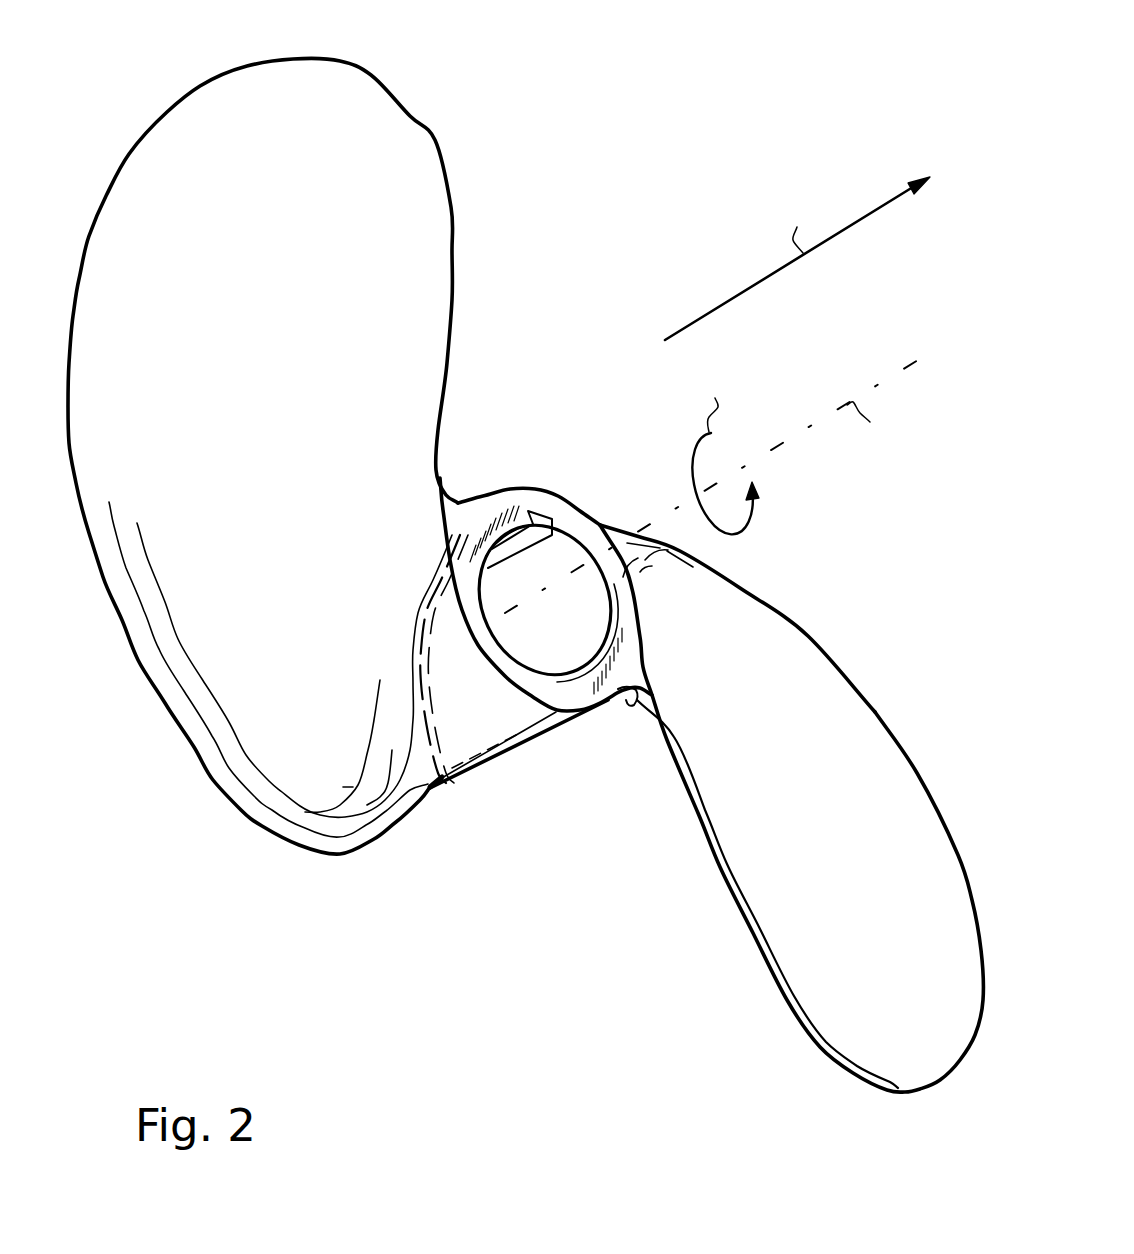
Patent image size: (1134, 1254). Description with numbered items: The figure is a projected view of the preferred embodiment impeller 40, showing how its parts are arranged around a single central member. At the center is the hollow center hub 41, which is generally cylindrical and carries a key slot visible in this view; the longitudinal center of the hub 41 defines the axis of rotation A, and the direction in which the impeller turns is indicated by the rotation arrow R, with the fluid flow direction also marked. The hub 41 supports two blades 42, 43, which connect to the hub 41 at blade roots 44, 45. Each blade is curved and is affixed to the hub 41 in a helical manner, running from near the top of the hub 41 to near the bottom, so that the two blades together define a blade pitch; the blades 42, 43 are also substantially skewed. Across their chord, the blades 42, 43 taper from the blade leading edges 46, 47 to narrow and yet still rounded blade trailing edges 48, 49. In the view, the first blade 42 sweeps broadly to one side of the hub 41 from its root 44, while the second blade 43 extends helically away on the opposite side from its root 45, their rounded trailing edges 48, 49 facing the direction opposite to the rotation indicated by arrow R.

The impeller 40 is at (545, 62).
The hollow center hub 41 is at (530, 743).
The blade 42 is at (465, 207).
The blade 43 is at (882, 708).
The blade root 44 is at (437, 790).
The blade root 45 is at (632, 694).
The blade leading edge 46 is at (382, 843).
The blade leading edge 47 is at (740, 583).
The blade trailing edge 48 is at (463, 500).
The blade trailing edge 49 is at (688, 803).